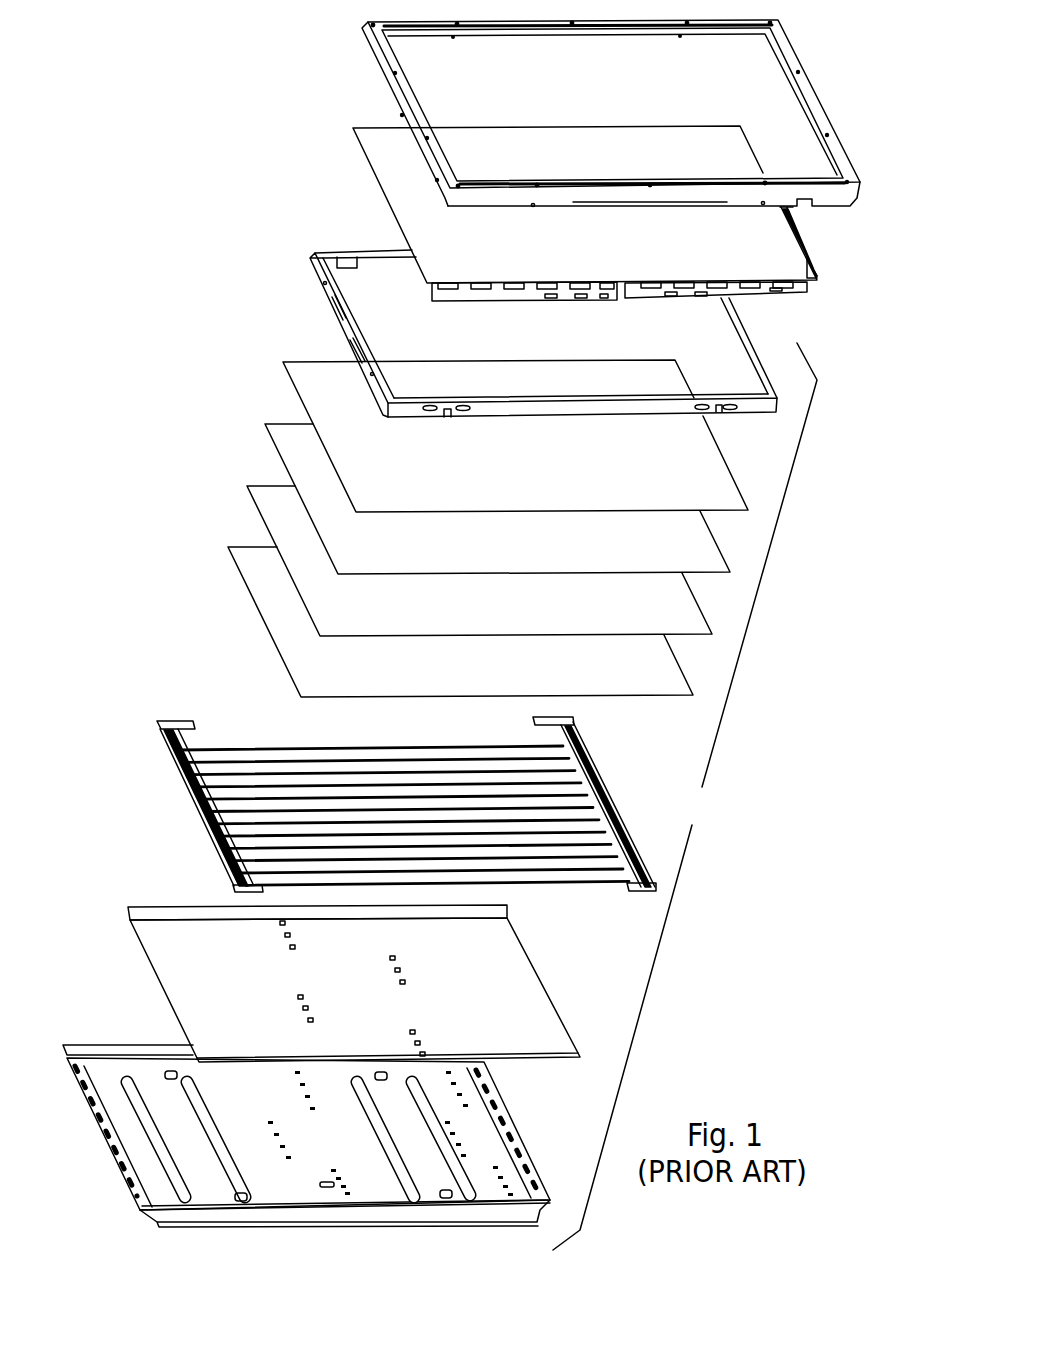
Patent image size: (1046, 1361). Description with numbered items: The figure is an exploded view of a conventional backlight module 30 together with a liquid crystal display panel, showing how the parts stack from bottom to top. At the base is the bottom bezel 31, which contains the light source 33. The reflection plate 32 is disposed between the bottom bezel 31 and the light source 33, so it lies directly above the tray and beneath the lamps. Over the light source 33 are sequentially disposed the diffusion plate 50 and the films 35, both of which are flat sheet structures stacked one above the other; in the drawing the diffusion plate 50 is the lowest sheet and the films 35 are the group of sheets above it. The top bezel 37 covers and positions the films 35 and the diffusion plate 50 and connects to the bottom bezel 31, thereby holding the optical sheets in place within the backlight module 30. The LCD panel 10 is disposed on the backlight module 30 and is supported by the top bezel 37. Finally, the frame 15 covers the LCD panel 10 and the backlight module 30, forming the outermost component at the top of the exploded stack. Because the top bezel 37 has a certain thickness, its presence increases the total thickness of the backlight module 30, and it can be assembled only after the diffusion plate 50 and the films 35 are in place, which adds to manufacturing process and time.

The LCD panel 10 is at (373, 147).
The frame 15 is at (372, 26).
The backlight module 30 is at (685, 796).
The bottom bezel 31 is at (110, 1108).
The reflection plate 32 is at (150, 940).
The light source 33 is at (158, 738).
The films 35 is at (281, 344).
The top bezel 37 is at (318, 268).
The diffusion plate 50 is at (257, 575).